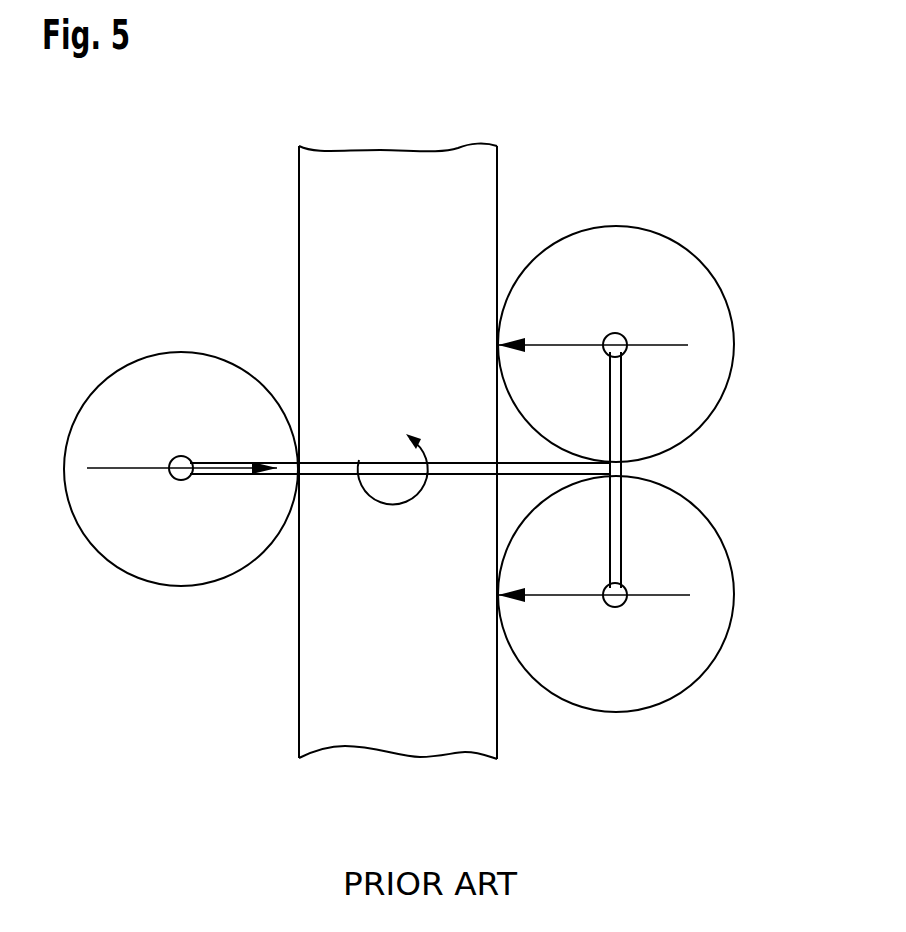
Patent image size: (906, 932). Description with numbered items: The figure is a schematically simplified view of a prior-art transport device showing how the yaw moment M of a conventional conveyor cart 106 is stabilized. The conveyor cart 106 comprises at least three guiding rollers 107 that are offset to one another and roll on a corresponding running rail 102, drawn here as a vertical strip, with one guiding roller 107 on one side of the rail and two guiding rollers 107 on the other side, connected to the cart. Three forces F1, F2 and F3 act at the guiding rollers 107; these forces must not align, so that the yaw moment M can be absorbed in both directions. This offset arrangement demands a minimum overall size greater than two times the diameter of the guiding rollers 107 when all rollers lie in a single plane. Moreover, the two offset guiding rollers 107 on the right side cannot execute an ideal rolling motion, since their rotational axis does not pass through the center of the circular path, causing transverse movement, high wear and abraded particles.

The workpiece plate 102 is at (470, 205).
The conveyor cart 106 is at (386, 470).
The guiding rollers 107 is at (687, 275).
The force F1 is at (147, 468).
The force F2 is at (572, 597).
The force F3 is at (583, 343).
The yaw moment M is at (387, 505).